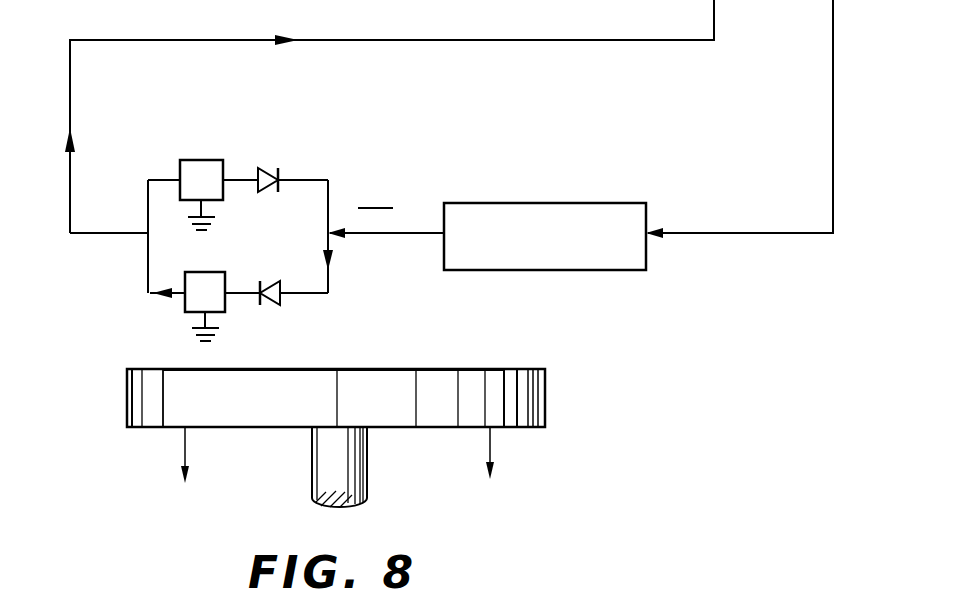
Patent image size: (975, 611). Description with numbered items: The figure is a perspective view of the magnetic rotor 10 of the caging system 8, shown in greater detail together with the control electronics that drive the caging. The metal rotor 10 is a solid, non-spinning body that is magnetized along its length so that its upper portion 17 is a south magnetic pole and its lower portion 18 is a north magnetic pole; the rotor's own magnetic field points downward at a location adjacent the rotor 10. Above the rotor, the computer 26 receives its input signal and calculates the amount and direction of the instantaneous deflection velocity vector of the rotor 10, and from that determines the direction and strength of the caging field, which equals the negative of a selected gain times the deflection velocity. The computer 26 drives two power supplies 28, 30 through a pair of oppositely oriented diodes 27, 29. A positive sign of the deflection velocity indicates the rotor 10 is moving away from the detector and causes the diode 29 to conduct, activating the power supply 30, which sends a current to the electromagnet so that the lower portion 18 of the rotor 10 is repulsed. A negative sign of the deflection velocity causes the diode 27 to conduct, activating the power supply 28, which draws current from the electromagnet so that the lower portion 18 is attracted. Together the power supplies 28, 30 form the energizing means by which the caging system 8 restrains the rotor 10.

The caging system 8 is at (678, 309).
The metal rotor 10 is at (127, 390).
The upper portion 17 is at (367, 370).
The lower portion 18 is at (517, 428).
The computer 26 is at (597, 203).
The diode 27 is at (262, 167).
The power supply 28 is at (187, 160).
The diode 29 is at (272, 303).
The power supply 30 is at (210, 272).